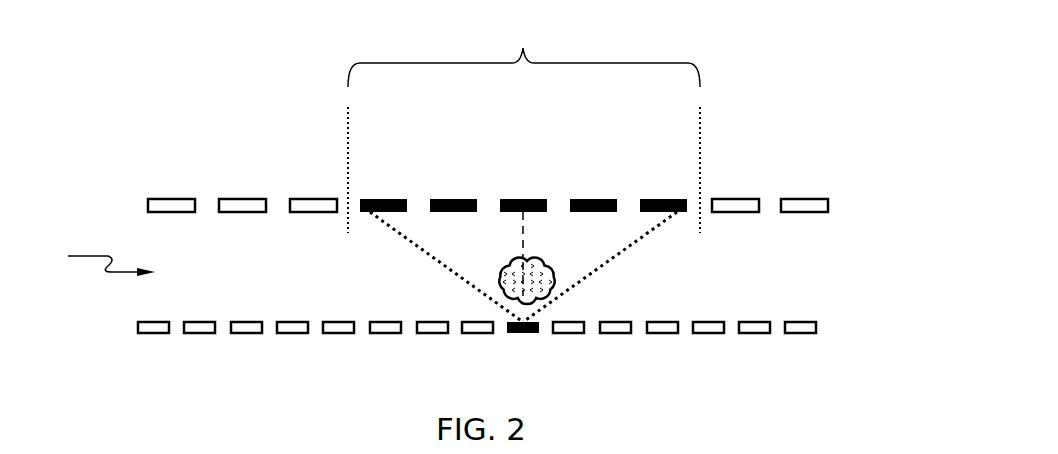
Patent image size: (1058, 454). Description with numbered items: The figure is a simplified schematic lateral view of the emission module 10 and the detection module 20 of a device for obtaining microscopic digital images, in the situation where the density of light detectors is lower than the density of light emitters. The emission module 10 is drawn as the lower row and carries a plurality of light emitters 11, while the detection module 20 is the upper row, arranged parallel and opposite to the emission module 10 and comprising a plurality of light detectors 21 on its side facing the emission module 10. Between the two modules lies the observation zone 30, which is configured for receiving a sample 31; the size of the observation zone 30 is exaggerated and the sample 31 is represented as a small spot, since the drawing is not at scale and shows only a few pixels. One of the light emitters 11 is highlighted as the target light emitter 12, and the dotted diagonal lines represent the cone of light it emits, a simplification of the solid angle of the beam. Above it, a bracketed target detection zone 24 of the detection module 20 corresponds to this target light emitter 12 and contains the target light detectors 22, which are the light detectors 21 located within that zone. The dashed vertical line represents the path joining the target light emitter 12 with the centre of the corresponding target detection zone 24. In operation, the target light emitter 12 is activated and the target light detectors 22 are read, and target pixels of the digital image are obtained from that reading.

The emission module 10 is at (106, 321).
The light emitters 11 is at (708, 333).
The target light emitter 12 is at (522, 333).
The detection module 20 is at (122, 206).
The light detectors 21 is at (736, 199).
The target light detectors 22 is at (531, 199).
The target detection zone 24 is at (524, 122).
The observation zone 30 is at (92, 259).
The sample 31 is at (498, 279).